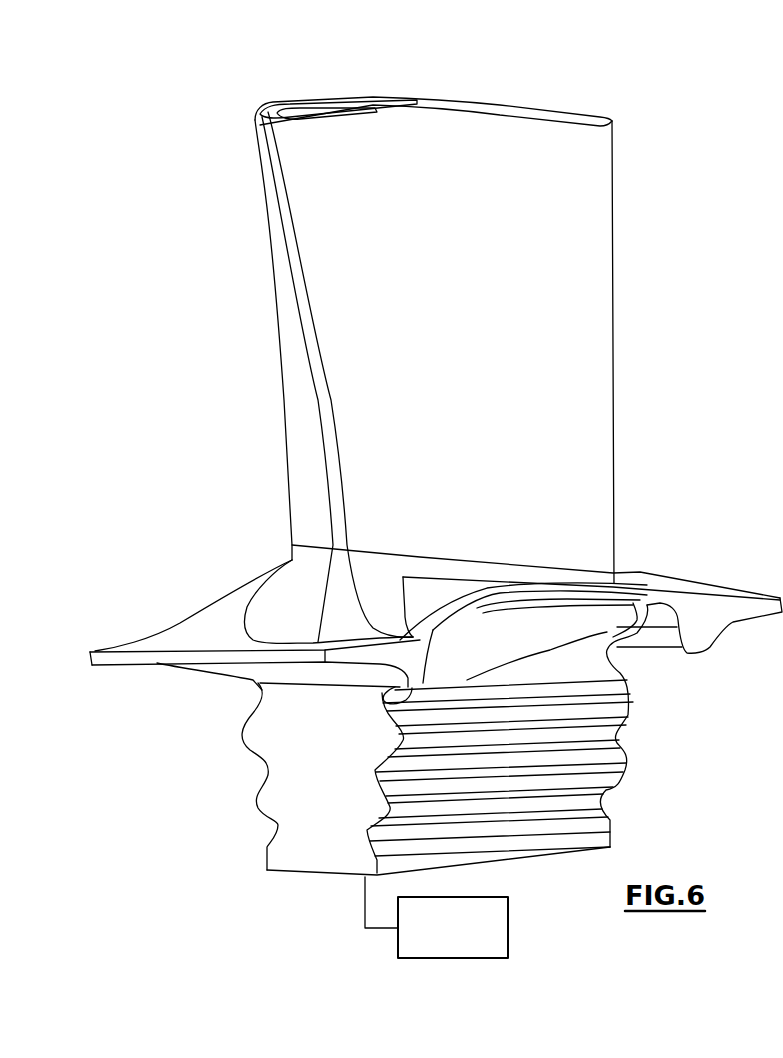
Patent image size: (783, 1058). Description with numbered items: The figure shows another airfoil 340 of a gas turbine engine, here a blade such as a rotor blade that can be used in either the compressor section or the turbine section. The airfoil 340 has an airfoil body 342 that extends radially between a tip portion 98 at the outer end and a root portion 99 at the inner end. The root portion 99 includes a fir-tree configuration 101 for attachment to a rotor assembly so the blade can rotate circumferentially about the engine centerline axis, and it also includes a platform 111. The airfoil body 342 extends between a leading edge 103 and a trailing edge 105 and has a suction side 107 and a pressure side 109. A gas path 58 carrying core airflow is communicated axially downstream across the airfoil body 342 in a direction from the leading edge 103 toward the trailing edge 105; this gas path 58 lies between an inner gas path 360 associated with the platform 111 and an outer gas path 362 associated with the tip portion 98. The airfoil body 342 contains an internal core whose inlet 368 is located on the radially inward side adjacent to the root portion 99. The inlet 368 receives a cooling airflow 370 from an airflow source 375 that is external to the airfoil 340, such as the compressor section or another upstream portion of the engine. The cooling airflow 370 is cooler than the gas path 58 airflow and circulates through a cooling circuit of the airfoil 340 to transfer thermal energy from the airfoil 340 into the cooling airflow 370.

The gas path 58 is at (225, 376).
The tip portion 98 is at (462, 102).
The root portion 99 is at (241, 774).
The fir-tree configuration 101 is at (638, 712).
The leading edge 103 is at (290, 352).
The trailing edge 105 is at (615, 353).
The suction side 107 is at (270, 232).
The pressure side 109 is at (367, 426).
The platform 111 is at (722, 605).
The airfoil 340 is at (570, 113).
The airfoil body 342 is at (472, 318).
The inner gas path 360 is at (549, 576).
The outer gas path 362 is at (448, 120).
The inlet 368 is at (305, 875).
The cooling airflow 370 is at (363, 908).
The airflow source 375 is at (509, 920).